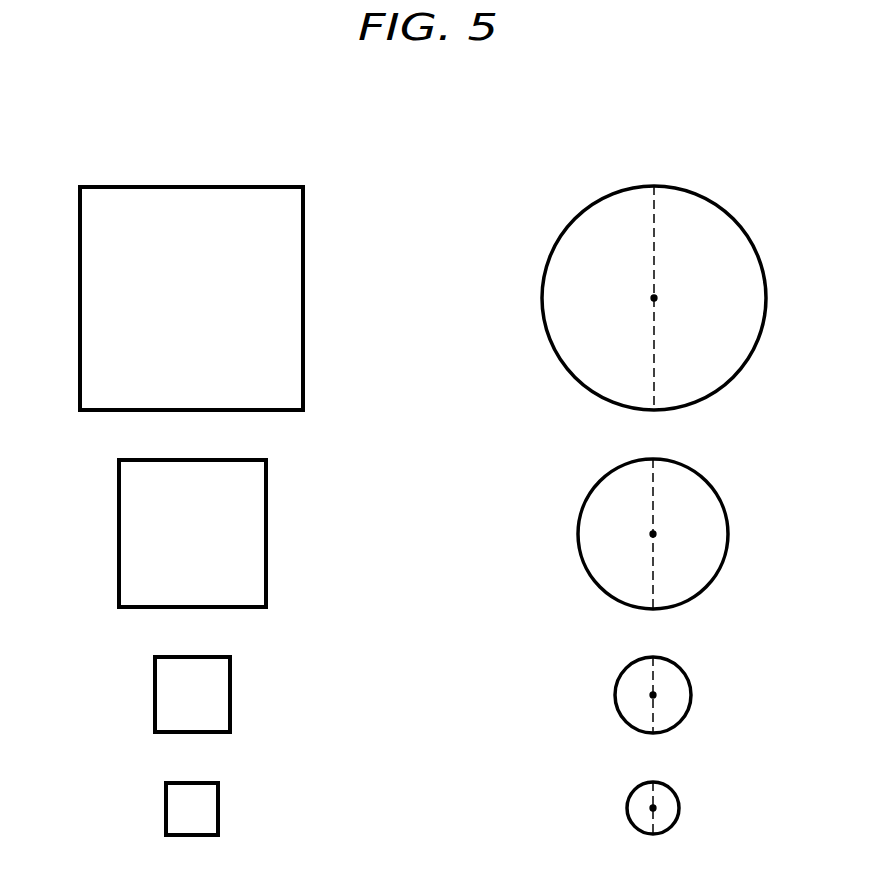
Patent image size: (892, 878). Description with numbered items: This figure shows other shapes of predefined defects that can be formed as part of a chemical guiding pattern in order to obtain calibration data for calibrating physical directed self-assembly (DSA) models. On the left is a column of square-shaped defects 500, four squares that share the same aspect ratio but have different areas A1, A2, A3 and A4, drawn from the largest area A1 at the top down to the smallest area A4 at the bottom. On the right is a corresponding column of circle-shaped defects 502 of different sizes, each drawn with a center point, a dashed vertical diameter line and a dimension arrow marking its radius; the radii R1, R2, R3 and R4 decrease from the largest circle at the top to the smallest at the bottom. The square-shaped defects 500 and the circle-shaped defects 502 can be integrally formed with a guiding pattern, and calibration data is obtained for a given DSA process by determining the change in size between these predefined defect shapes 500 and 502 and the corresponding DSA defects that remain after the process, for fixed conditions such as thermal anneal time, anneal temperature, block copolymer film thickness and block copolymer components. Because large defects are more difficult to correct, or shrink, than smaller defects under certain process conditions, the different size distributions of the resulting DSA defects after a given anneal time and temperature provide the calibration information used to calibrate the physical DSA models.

The square-shaped defects 500 is at (78, 147).
The circle-shaped defects 502 is at (539, 147).
The area of first square-shaped defect A1 is at (191, 298).
The area of second square-shaped defect A2 is at (192, 533).
The area of third square-shaped defect A3 is at (192, 694).
The area of fourth square-shaped defect A4 is at (192, 809).
The radius of first circle-shaped defect R1 is at (766, 298).
The radius of second circle-shaped defect R2 is at (728, 534).
The radius of third circle-shaped defect R3 is at (691, 695).
The radius of fourth circle-shaped defect R4 is at (653, 808).